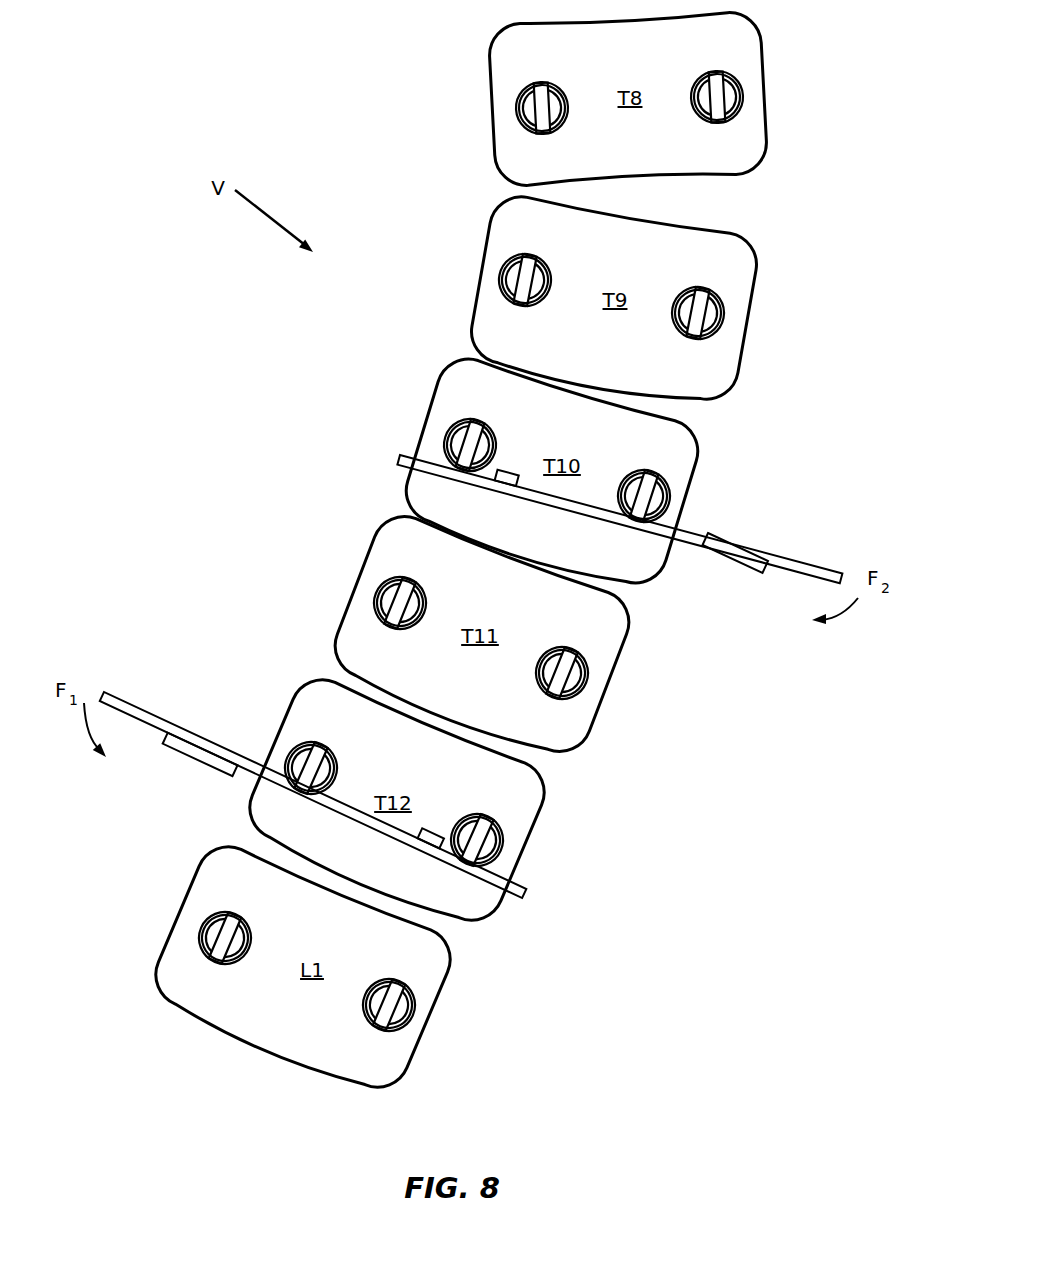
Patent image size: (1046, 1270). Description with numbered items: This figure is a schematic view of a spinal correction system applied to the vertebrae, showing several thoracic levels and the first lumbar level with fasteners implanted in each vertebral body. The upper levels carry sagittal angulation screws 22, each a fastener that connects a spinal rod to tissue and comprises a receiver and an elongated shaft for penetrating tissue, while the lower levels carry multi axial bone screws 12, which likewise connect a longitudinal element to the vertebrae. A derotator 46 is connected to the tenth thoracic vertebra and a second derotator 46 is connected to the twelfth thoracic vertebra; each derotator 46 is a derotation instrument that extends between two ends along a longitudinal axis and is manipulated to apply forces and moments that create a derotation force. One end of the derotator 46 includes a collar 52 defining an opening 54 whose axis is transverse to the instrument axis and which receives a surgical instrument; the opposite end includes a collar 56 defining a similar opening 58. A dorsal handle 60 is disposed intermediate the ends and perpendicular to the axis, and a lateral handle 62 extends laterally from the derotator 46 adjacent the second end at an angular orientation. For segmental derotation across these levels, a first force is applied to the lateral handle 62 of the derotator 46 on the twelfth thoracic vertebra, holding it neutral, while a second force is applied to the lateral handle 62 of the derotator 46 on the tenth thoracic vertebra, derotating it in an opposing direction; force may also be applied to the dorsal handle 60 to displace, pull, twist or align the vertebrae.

The multi axial bone screw 12 is at (495, 868).
The sagittal angulation screw 22 is at (500, 272).
The derotator 46 is at (400, 462).
The collar 52 is at (455, 436).
The opening 54 is at (485, 602).
The collar 56 is at (678, 503).
The opening 58 is at (495, 619).
The dorsal handle 60 is at (512, 472).
The lateral handle 62 is at (797, 562).